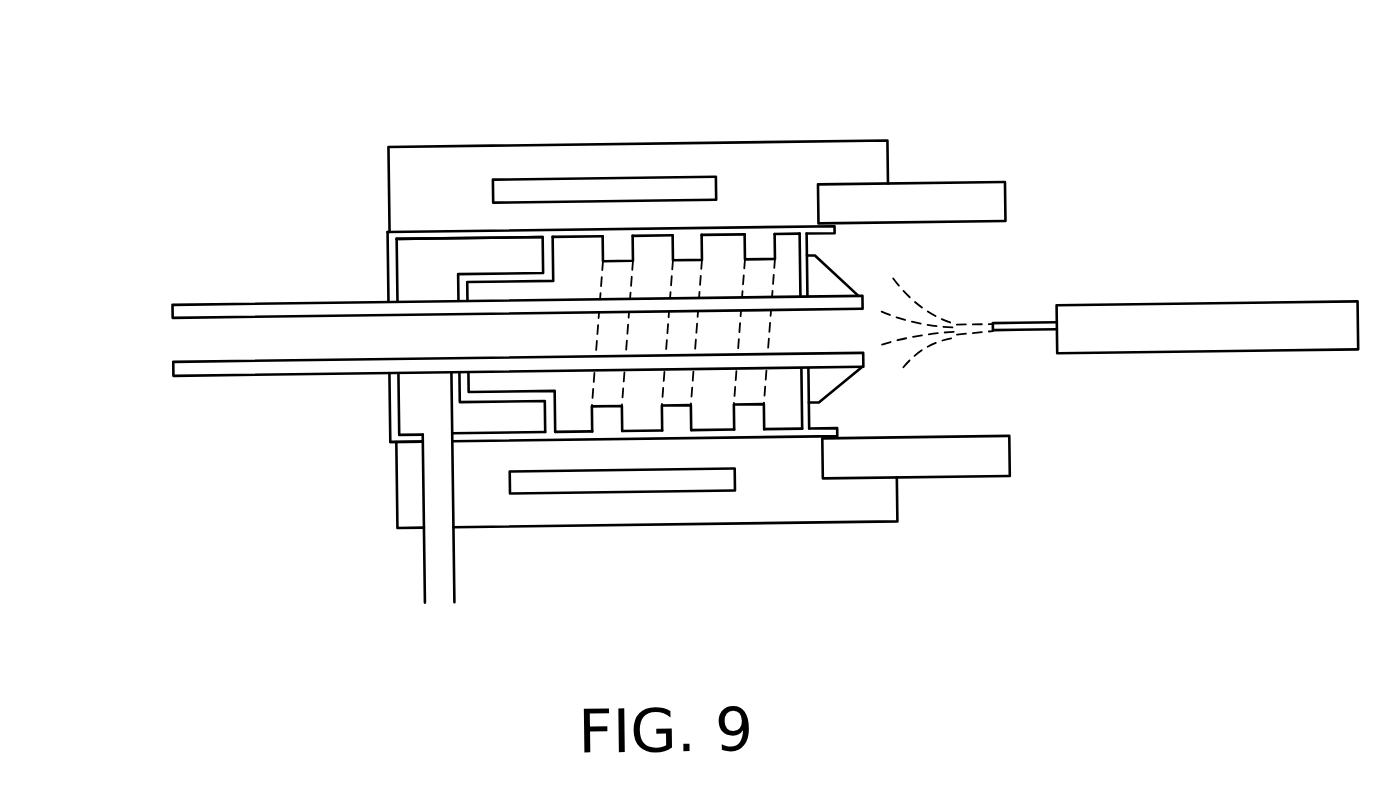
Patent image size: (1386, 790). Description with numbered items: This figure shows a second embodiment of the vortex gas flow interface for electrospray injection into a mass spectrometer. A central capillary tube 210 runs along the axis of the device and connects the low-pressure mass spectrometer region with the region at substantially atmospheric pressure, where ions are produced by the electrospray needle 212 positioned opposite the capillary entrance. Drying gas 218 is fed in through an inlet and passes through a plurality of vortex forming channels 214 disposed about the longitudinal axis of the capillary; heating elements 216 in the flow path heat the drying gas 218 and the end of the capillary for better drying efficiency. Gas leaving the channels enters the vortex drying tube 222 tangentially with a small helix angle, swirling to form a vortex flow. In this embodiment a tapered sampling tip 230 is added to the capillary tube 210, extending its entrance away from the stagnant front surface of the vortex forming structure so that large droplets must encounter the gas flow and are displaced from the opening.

The central capillary tube 210 is at (107, 411).
The electrospray needle 212 is at (1103, 271).
The vortex forming channels 214 is at (803, 92).
The heating element 216 is at (620, 567).
The drying gas 218 is at (396, 652).
The vortex drying tube 222 is at (981, 520).
The sampling tip 230 is at (868, 416).